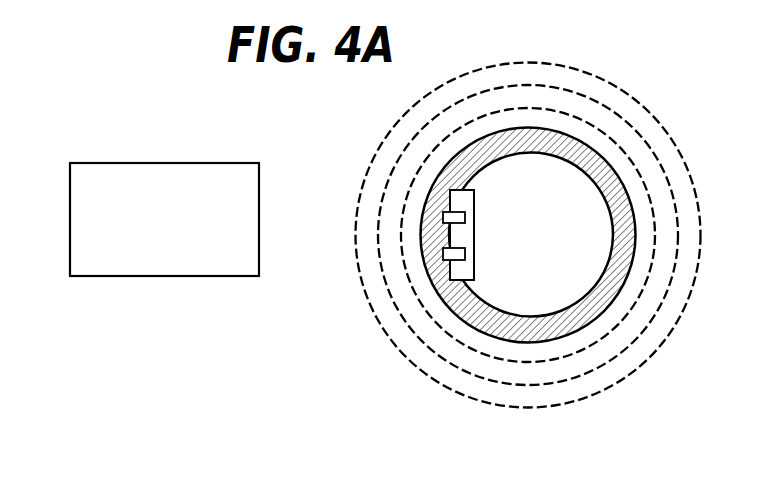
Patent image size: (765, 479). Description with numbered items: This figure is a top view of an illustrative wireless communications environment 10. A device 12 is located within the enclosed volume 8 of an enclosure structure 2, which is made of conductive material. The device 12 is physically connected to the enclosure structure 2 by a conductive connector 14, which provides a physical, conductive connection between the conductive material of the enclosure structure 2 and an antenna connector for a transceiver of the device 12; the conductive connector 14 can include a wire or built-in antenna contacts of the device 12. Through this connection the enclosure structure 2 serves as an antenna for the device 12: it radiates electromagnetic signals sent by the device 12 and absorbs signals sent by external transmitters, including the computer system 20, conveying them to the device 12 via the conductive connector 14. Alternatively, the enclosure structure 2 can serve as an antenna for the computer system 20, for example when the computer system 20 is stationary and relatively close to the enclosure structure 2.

The wireless communications environment 10 is at (115, 125).
The enclosure structure 2 is at (365, 137).
The enclosed volume 8 is at (542, 247).
The device 12 is at (465, 202).
The conductive connector 14 is at (445, 218).
The computer system 20 is at (151, 263).